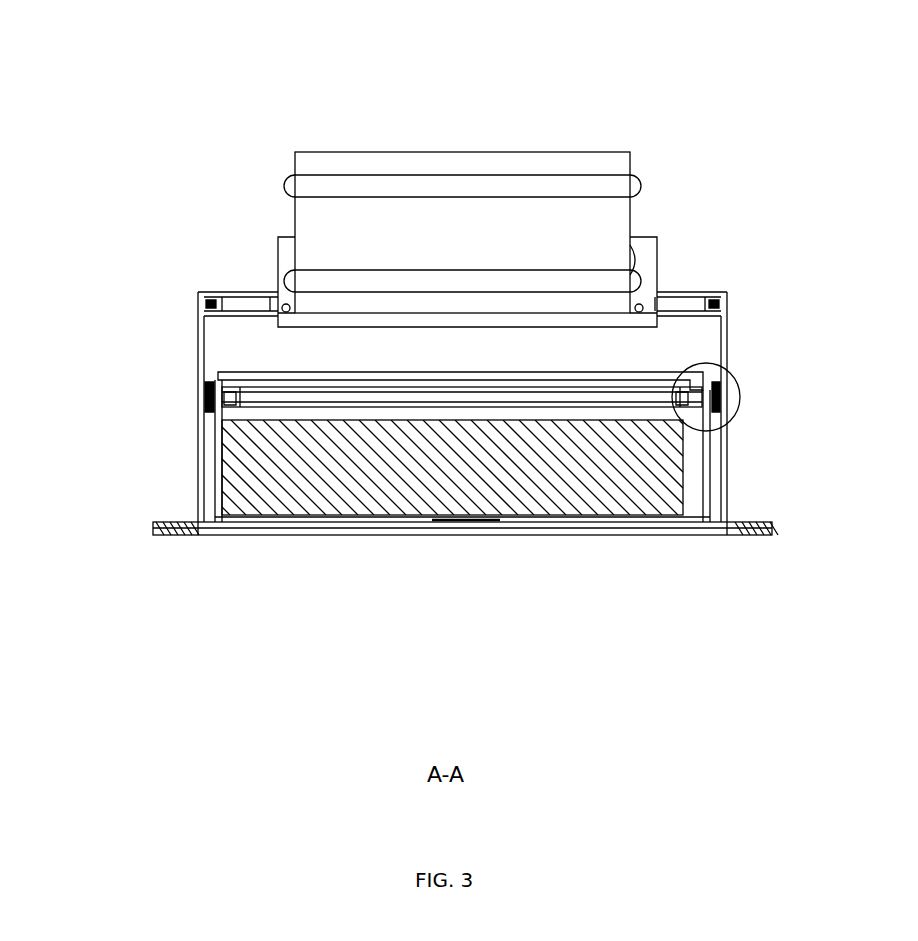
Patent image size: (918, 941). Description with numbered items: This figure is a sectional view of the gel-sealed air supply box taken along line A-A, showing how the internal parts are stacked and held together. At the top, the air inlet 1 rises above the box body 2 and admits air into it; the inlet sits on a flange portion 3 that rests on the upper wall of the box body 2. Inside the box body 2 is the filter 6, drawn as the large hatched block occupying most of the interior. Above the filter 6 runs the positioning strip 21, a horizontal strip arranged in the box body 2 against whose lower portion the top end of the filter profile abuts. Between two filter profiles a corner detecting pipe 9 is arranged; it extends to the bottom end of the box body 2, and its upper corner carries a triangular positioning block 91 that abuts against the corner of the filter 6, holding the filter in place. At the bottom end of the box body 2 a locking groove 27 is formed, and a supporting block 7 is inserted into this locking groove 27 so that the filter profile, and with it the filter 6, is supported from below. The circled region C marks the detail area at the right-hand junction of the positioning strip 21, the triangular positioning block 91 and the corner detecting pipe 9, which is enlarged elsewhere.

The air inlet 1 is at (445, 225).
The mounting flange 3 is at (330, 320).
The box body 2 is at (198, 310).
The positioning strip 21 is at (218, 378).
The triangular positioning block 91 is at (215, 397).
The corner detecting pipe 9 is at (210, 415).
The filter 6 is at (385, 465).
The supporting block 7 is at (222, 530).
The locking groove 27 is at (178, 530).
The detail region C is at (737, 387).